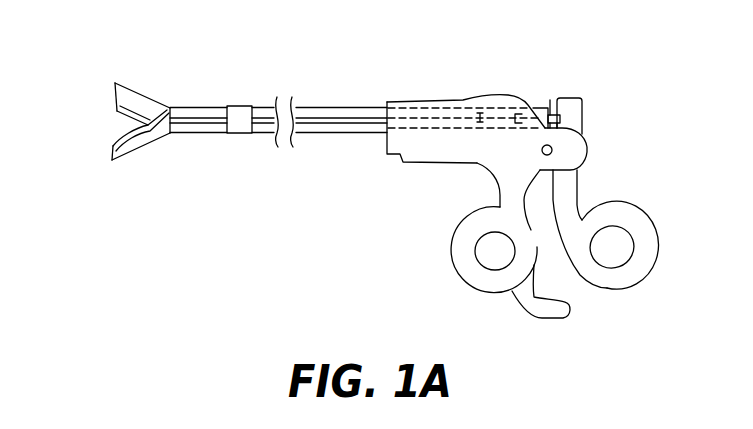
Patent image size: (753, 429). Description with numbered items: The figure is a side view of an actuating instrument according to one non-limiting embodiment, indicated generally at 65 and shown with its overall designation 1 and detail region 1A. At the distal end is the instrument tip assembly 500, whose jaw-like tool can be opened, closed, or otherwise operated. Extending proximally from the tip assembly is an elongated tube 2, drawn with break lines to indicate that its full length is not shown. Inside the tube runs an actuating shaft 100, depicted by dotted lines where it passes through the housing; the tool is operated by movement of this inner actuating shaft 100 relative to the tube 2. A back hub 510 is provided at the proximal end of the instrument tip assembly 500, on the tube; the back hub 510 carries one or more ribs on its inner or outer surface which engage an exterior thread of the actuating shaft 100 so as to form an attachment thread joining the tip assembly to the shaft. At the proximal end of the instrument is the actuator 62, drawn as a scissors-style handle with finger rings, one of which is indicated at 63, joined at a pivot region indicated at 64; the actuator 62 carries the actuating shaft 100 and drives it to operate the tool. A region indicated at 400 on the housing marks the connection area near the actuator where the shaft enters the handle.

The surgical instrument 65 is at (73, 107).
The instrument tip assembly 500 is at (260, 50).
The back hub 510 is at (240, 106).
The tube 2 is at (330, 125).
The actuating shaft 100 is at (416, 107).
The actuation mechanism 400 is at (543, 108).
The handle assembly 1 is at (550, 100).
The handle bracket 1A is at (575, 120).
The pivot pin 64 is at (552, 152).
The actuator 62 is at (620, 200).
The stationary handle finger ring 63 is at (450, 153).